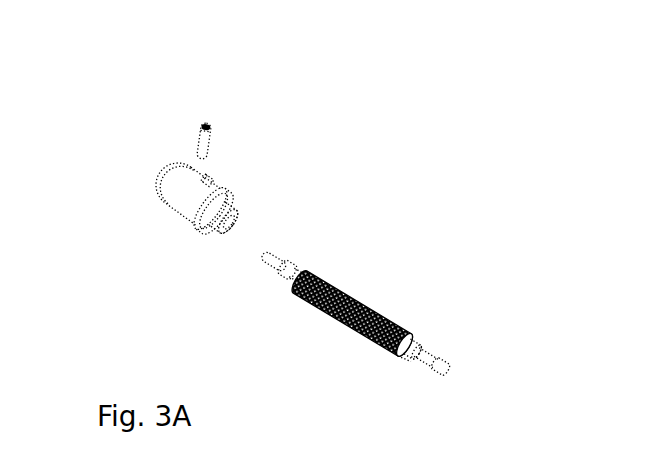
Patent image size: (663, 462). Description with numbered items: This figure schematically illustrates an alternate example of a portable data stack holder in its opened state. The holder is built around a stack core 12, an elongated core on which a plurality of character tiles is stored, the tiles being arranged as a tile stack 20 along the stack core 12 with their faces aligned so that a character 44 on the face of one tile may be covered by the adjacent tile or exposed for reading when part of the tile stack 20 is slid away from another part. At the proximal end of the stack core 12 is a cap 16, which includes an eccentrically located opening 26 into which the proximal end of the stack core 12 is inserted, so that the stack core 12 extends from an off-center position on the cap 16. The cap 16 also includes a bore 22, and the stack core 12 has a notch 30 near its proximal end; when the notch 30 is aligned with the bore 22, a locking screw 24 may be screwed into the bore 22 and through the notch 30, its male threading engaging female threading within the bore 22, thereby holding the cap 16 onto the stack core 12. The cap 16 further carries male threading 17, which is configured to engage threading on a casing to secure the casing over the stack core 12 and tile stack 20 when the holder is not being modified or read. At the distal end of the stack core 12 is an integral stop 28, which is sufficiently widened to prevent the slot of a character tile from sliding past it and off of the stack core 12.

The stack core 12 is at (418, 359).
The cap 16 is at (171, 192).
The male threading 17 is at (206, 209).
The tile stack 20 is at (336, 289).
The bore 22 is at (198, 183).
The locking screw 24 is at (208, 140).
The opening 26 is at (237, 223).
The integral stop 28 is at (440, 368).
The notch 30 is at (277, 270).
The character 44 is at (413, 345).